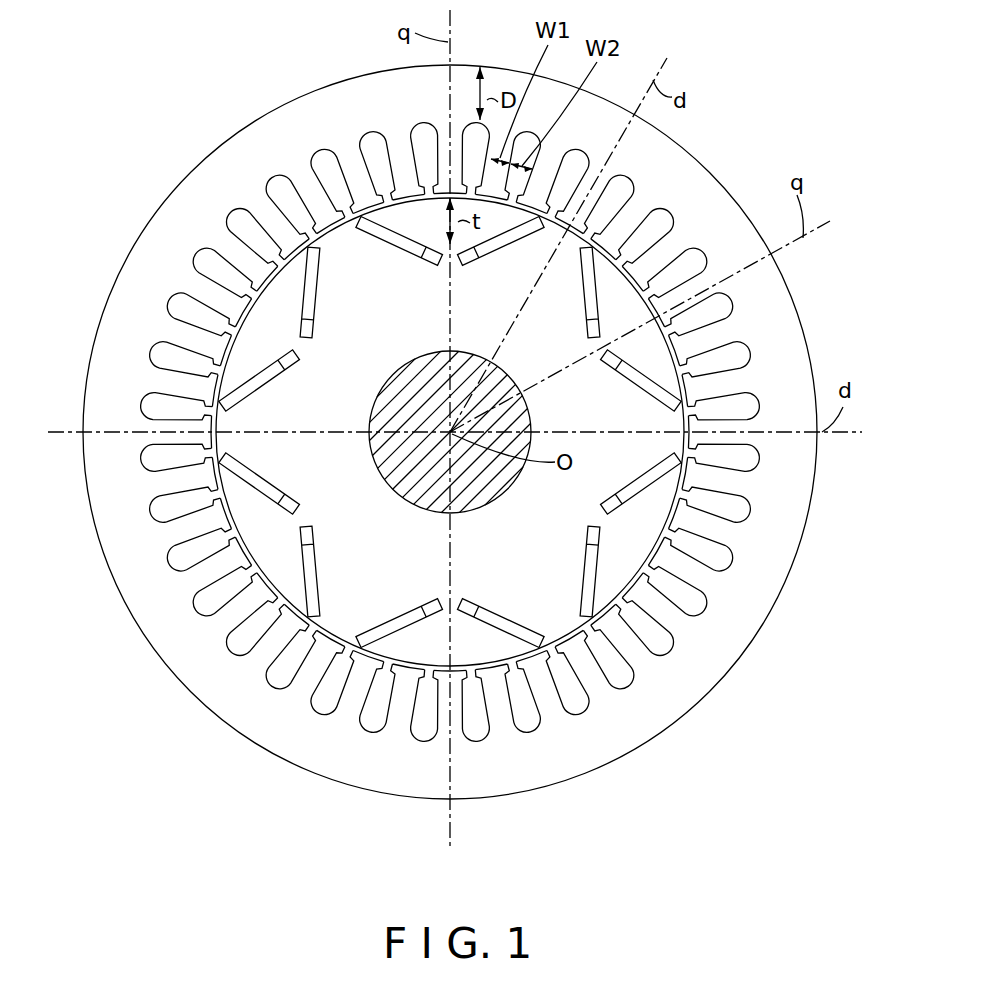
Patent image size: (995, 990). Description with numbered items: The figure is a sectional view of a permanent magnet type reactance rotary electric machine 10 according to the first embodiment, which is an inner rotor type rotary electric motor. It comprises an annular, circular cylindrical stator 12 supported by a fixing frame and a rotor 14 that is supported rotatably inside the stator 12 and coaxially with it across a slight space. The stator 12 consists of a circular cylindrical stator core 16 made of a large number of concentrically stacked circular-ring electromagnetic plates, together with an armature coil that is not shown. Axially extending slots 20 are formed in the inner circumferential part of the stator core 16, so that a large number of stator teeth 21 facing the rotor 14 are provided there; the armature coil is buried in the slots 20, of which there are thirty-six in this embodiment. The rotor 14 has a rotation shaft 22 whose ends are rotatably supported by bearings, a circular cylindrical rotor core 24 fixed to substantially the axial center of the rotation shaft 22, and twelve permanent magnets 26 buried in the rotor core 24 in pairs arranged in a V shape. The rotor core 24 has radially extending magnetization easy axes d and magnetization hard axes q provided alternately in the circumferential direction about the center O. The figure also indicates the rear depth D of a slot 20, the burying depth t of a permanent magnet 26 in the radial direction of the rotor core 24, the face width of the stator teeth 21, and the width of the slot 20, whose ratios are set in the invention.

The rotary electric machine 10 is at (450, 454).
The stator 12 is at (470, 454).
The rotor 14 is at (363, 498).
The stator core 16 is at (170, 668).
The slots 20 is at (528, 740).
The stator teeth 21 is at (723, 535).
The rotation shaft 22 is at (488, 492).
The rotor core 24 is at (216, 455).
The permanent magnets 26 is at (305, 280).